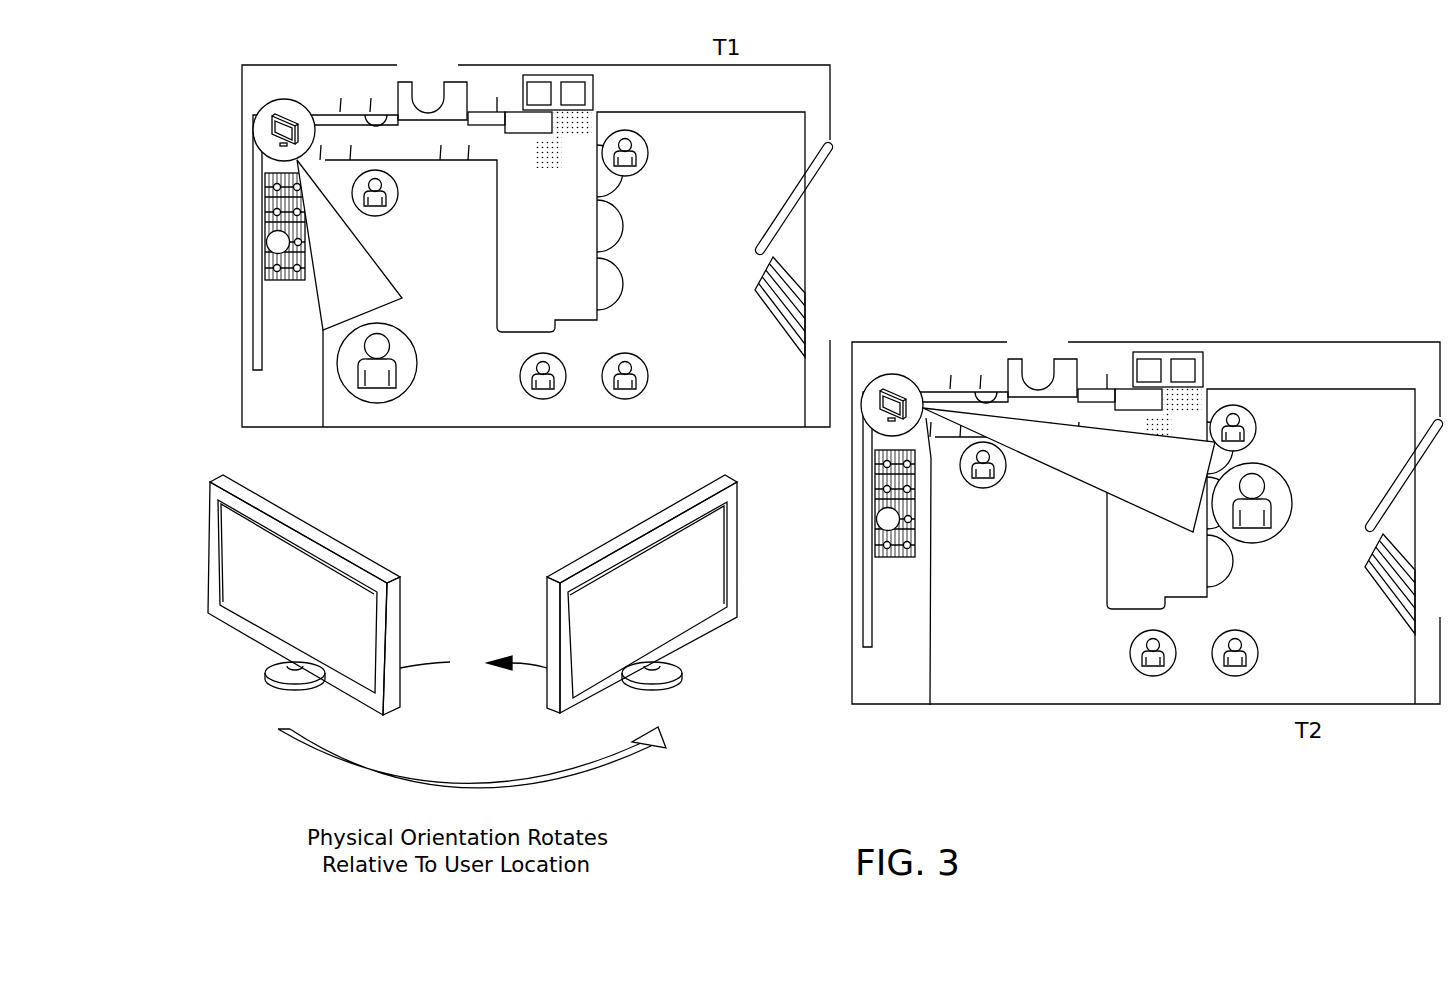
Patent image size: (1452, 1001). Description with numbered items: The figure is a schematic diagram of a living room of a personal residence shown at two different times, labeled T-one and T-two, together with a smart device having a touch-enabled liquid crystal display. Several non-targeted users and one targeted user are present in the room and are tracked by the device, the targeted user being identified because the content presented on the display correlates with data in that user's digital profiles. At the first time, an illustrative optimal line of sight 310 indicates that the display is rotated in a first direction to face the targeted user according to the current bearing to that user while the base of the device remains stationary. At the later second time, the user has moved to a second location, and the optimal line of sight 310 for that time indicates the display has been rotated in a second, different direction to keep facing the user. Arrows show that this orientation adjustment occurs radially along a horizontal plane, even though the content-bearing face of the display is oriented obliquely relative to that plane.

The optimal line of sight 310 is at (377, 262).